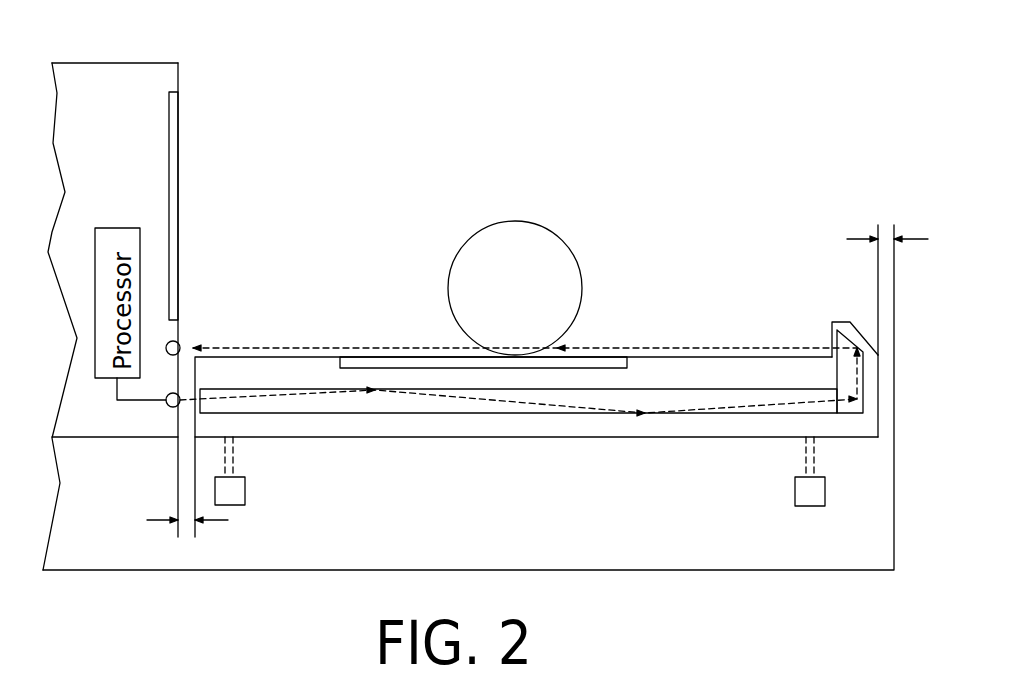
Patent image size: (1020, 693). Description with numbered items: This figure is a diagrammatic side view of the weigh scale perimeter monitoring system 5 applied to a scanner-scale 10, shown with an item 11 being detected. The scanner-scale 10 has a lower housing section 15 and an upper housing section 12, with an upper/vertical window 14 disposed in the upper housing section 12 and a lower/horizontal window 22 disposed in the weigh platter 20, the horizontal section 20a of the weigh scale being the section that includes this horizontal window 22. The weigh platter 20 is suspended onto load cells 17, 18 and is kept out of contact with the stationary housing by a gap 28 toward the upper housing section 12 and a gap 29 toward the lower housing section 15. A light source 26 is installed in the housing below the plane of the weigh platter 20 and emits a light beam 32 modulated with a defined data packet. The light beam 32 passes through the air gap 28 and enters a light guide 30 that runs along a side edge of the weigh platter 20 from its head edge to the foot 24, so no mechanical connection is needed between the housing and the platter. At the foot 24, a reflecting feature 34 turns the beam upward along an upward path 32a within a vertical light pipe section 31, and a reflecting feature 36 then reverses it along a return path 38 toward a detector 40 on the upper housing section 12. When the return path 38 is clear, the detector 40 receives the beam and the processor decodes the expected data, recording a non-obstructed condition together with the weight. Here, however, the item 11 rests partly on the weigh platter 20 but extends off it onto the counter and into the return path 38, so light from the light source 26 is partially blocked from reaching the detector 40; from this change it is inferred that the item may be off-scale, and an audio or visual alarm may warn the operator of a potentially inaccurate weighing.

The weigh scale perimeter monitoring system 5 is at (447, 118).
The scanner-scale 10 is at (182, 73).
The item 11 is at (566, 238).
The upper housing section 12 is at (165, 63).
The upper/vertical window 14 is at (178, 234).
The lower housing section 15 is at (632, 552).
The load cell 17 is at (234, 493).
The load cell 18 is at (800, 493).
The weigh platter 20 is at (543, 437).
The lower (horizontal) section of the weigh scale 20a is at (634, 425).
The lower/horizontal window 22 is at (367, 363).
The foot of the weigh platter 24 is at (858, 330).
The light source 26 is at (169, 407).
The gap 28 is at (188, 522).
The gap 29 is at (887, 238).
The light guide 30 is at (277, 414).
The vertical light pipe section 31 is at (845, 372).
The light beam 32 is at (482, 400).
The upward path 32a is at (860, 375).
The reflecting feature 34 is at (852, 408).
The reflecting feature 36 is at (833, 323).
The return path 38 is at (690, 348).
The detector 40 is at (180, 345).